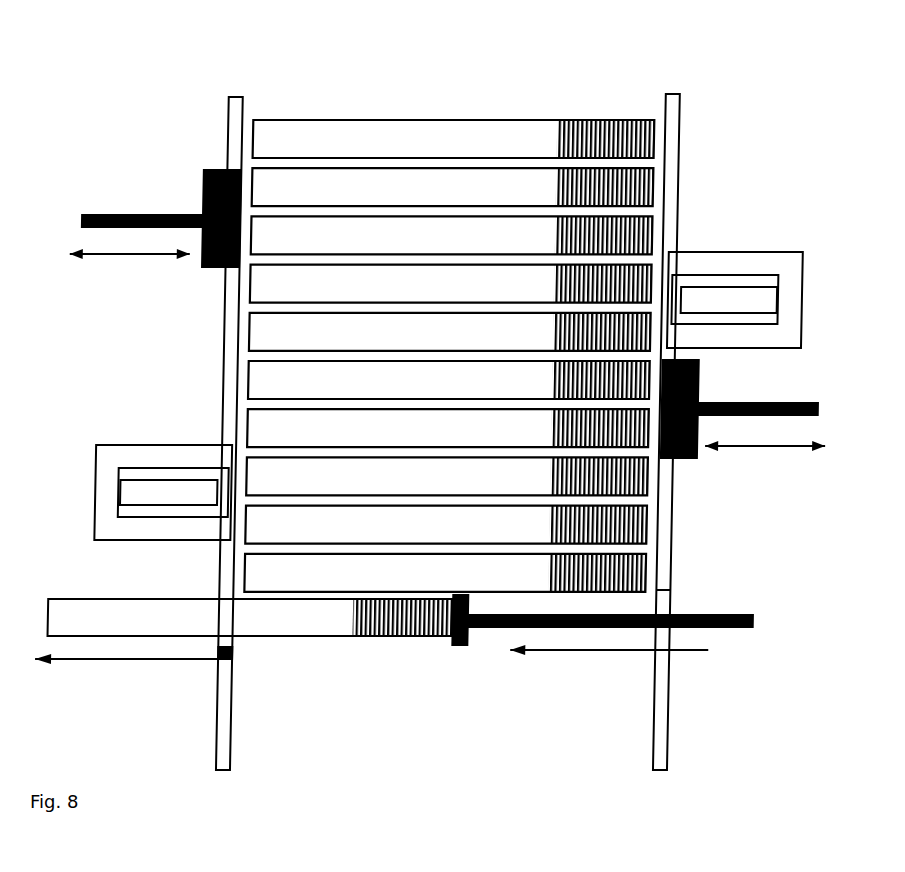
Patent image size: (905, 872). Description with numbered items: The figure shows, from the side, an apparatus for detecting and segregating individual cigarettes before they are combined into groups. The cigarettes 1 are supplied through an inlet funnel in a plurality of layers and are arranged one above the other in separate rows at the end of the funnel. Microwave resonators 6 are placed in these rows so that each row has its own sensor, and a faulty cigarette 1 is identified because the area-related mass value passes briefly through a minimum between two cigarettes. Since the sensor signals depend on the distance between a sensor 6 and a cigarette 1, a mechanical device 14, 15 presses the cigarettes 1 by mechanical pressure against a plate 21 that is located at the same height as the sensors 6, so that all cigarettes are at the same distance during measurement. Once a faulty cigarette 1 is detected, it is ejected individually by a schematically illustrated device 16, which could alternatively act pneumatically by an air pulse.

The cigarette 1 is at (472, 147).
The microwave resonator 6 is at (129, 493).
The mechanical device 14 is at (141, 226).
The mechanical device 15 is at (760, 415).
The ejection device 16 is at (703, 627).
The plate 21 is at (248, 110).